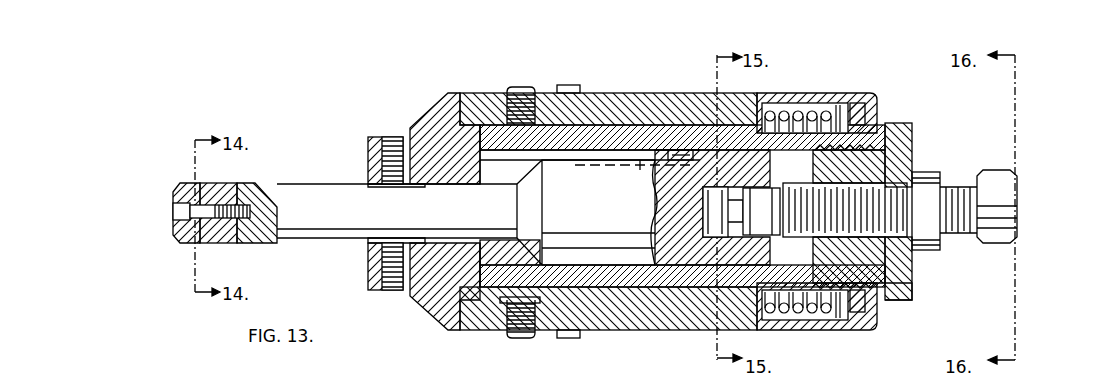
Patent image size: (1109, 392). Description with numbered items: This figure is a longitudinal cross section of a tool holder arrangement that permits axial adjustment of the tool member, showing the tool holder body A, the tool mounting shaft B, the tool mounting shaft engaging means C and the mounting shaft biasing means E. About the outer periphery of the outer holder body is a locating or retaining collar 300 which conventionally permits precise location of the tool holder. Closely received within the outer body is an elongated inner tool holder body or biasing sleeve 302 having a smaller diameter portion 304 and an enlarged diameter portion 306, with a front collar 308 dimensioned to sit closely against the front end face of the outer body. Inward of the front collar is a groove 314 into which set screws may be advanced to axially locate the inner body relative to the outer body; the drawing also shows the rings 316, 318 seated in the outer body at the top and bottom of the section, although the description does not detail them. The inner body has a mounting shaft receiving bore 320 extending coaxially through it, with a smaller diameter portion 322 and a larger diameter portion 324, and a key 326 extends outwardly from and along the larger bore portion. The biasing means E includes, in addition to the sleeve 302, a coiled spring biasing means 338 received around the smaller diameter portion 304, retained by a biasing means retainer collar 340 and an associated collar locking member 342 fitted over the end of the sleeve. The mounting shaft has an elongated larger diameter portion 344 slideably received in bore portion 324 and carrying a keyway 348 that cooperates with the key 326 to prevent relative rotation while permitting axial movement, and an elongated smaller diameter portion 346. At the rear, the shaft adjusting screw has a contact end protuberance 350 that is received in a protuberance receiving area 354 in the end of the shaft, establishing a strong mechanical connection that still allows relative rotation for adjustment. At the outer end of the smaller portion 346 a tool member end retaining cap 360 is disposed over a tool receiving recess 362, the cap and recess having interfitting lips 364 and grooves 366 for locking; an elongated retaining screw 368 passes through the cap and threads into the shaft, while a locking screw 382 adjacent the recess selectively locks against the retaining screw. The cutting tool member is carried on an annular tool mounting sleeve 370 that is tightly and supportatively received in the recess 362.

The locating or retaining collar 300 is at (575, 85).
The inner tool holder body or biasing sleeve 302 is at (607, 117).
The smaller diameter portion 304 is at (780, 300).
The enlarged diameter portion 306 is at (633, 290).
The front collar 308 is at (438, 128).
The groove 314 is at (535, 296).
The ring 316 is at (522, 86).
The ring 318 is at (518, 336).
The mounting shaft receiving bore 320 is at (500, 252).
The smaller diameter portion 322 is at (405, 178).
The larger diameter portion 324 is at (513, 168).
The key 326 is at (660, 145).
The coiled spring biasing means 338 is at (820, 105).
The biasing means retainer collar 340 is at (845, 312).
The collar locking member 342 is at (910, 290).
The larger diameter portion 344 is at (610, 225).
The smaller diameter portion 346 is at (365, 221).
The keyway 348 is at (640, 170).
The contact end protuberance 350 is at (718, 236).
The protuberance receiving area 354 is at (705, 188).
The tool member end retaining cap 360 is at (185, 243).
The tool receiving recess 362 is at (188, 183).
The lips 364 is at (218, 183).
The grooves 366 is at (222, 243).
The retaining screw 368 is at (178, 212).
The annular tool mounting sleeve 370 is at (235, 243).
The locking screw 382 is at (235, 183).
The tool holder body A is at (506, 88).
The tool mounting shaft B is at (352, 180).
The tool mounting shaft engaging means C is at (918, 148).
The mounting shaft biasing means E is at (812, 100).